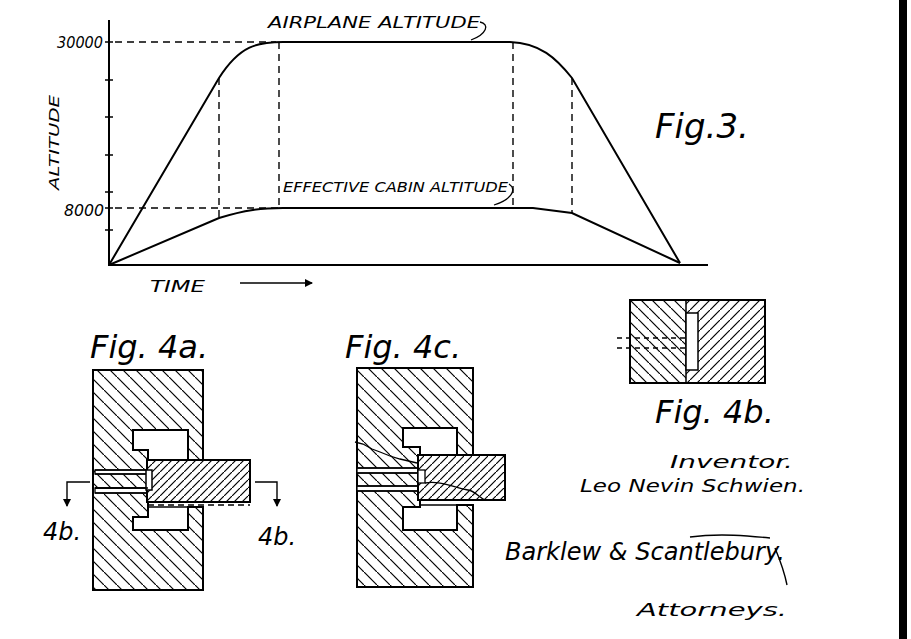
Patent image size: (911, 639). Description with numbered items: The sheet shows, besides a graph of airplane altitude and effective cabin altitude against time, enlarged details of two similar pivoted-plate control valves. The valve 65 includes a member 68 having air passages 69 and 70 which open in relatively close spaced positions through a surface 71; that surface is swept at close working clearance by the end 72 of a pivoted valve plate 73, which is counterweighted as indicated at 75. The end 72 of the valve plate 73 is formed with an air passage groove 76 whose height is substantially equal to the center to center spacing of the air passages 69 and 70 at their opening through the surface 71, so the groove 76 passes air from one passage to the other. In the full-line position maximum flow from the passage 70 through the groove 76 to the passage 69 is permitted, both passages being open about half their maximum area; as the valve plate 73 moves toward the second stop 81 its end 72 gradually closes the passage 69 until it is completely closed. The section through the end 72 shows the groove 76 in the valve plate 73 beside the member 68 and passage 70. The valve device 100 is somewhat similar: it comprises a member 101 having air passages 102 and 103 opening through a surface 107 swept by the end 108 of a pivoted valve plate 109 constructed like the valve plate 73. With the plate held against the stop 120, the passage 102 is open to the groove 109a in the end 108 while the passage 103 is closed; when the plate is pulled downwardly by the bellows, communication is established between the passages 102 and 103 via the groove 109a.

In FIG. 4A, the valve 65 is at (92, 591).
In FIG. 4B, the valve 65 is at (642, 387).
In FIG. 4A, the member 68 is at (110, 400).
In FIG. 4B, the member 68 is at (652, 318).
In FIG. 4A, the air passage 69 is at (97, 471).
In FIG. 4A, the air passage 70 is at (118, 492).
In FIG. 4B, the air passage 70 is at (640, 339).
In FIG. 4A, the surface 71 is at (155, 507).
In FIG. 4A, the end of valve plate 72 is at (140, 462).
In FIG. 4A, the valve plate 73 is at (230, 460).
In FIG. 4B, the valve plate 73 is at (747, 306).
In FIG. 4A, the counterweight 75 is at (197, 460).
In FIG. 4A, the air passage groove 76 is at (155, 483).
In FIG. 4B, the air passage groove 76 is at (693, 318).
In FIG. 4A, the second stop 81 is at (200, 507).
In FIG. 4C, the valve device 100 is at (357, 591).
In FIG. 4C, the member 101 is at (370, 570).
In FIG. 4C, the air passage 102 is at (368, 470).
In FIG. 4C, the air passage 103 is at (368, 490).
In FIG. 4C, the surface 107 is at (420, 505).
In FIG. 4C, the end of valve plate 108 is at (355, 442).
In FIG. 4C, the valve plate 109 is at (505, 471).
In FIG. 4C, the groove 109a is at (485, 500).
In FIG. 4C, the stop 120 is at (471, 453).